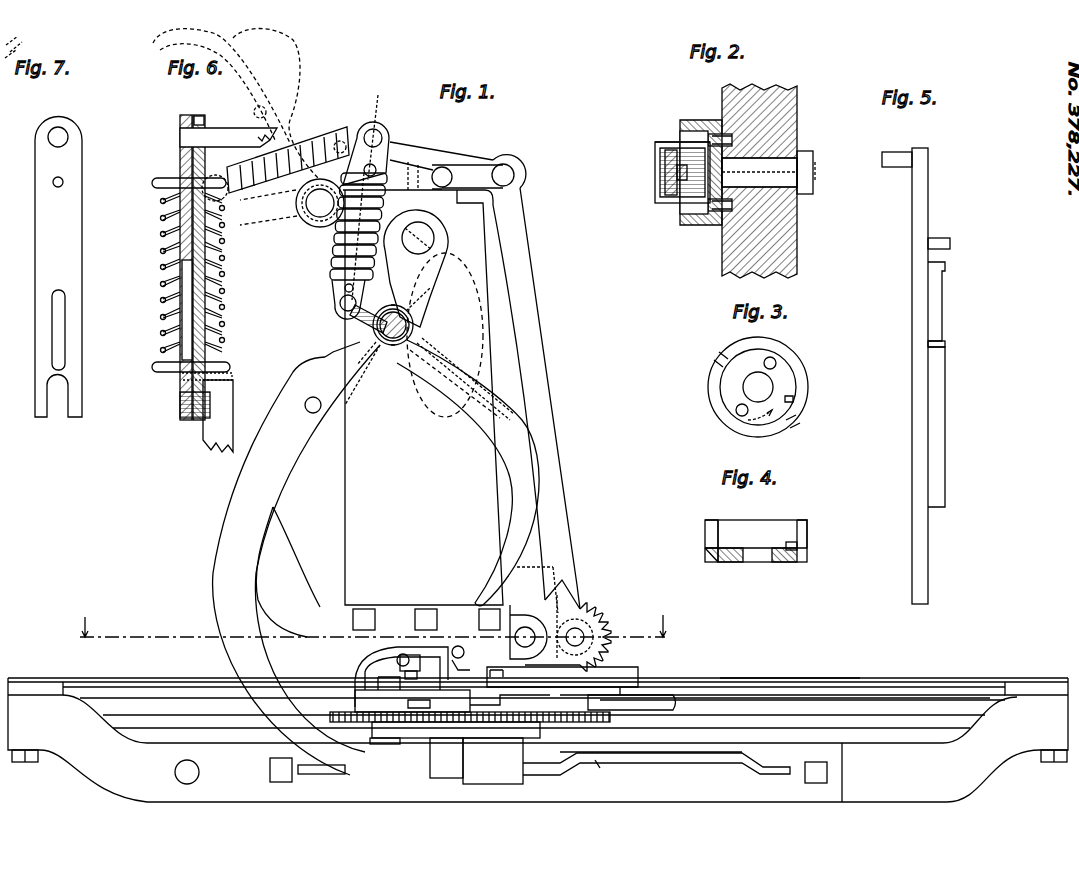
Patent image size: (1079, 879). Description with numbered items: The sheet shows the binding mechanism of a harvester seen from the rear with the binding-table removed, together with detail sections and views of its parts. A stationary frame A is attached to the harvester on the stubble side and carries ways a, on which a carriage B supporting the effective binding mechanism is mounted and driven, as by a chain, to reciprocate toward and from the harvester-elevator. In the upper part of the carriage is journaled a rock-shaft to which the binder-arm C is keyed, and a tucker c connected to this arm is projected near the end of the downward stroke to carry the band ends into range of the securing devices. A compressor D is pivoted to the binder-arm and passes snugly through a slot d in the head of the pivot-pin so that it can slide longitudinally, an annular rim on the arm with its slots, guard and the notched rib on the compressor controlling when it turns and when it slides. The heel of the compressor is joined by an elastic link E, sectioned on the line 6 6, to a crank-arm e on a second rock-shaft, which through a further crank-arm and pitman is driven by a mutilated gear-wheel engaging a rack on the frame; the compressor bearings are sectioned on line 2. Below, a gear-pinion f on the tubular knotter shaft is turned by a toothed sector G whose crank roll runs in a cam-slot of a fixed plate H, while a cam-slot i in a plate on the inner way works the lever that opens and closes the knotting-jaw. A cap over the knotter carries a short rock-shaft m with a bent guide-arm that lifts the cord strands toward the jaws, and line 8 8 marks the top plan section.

In FIG. 1, the stationary frame A is at (538, 740).
In FIG. 1, the ways a is at (782, 719).
In FIG. 1, the carriage B is at (423, 396).
In FIG. 1, the binder-arm C is at (296, 558).
In FIG. 2, the binder-arm C is at (795, 240).
In FIG. 6, the tucker c is at (231, 136).
In FIG. 6, the compressor D is at (212, 444).
In FIG. 1, the compressor D is at (468, 472).
In FIG. 2, the compressor D is at (665, 206).
In FIG. 5, the compressor D is at (912, 470).
In FIG. 2, the slot d is at (662, 183).
In FIG. 6, the elastic link E is at (199, 273).
In FIG. 1, the elastic link E is at (338, 292).
In FIG. 1, the crank-arm e is at (441, 156).
In FIG. 1, the gear-pinion f is at (476, 761).
In FIG. 1, the toothed sector G is at (568, 718).
In FIG. 1, the fixed plate H is at (752, 670).
In FIG. 1, the cam-slot i is at (598, 770).
In FIG. 1, the rock-shaft m is at (465, 654).
In FIG. 1, the section line 6 6 is at (395, 107).
In FIG. 1, the section line 2 is at (396, 329).
In FIG. 1, the section line 8 8 is at (372, 631).